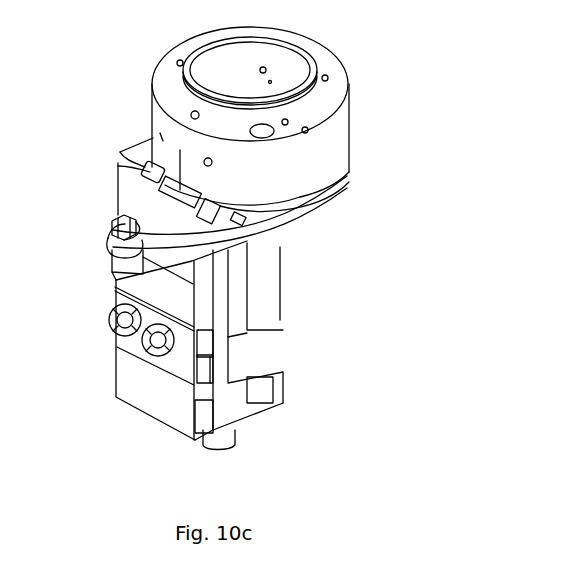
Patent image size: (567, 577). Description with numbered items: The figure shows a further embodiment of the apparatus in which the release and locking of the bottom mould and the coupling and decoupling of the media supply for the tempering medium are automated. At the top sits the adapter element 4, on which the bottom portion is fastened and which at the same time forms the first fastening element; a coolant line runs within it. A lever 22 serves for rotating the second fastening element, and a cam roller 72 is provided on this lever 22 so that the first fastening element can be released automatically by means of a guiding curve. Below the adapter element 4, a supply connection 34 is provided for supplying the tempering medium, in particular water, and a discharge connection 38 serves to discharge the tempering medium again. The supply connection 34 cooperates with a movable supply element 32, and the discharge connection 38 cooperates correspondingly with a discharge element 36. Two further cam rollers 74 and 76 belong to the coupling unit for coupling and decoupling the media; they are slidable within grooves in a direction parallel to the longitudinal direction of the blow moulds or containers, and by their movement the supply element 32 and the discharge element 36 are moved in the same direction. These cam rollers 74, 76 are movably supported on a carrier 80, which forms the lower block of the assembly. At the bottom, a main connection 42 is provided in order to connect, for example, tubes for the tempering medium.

The adapter element 4 is at (325, 148).
The lever 22 is at (118, 198).
The supply element 32 is at (197, 208).
The supply connection 34 is at (272, 223).
The discharge element 36 is at (117, 164).
The discharge connection 38 is at (122, 150).
The main connection 42 is at (233, 443).
The cam roller 72 is at (97, 262).
The cam roller 74 is at (108, 312).
The cam roller 76 is at (168, 352).
The carrier 80 is at (128, 376).